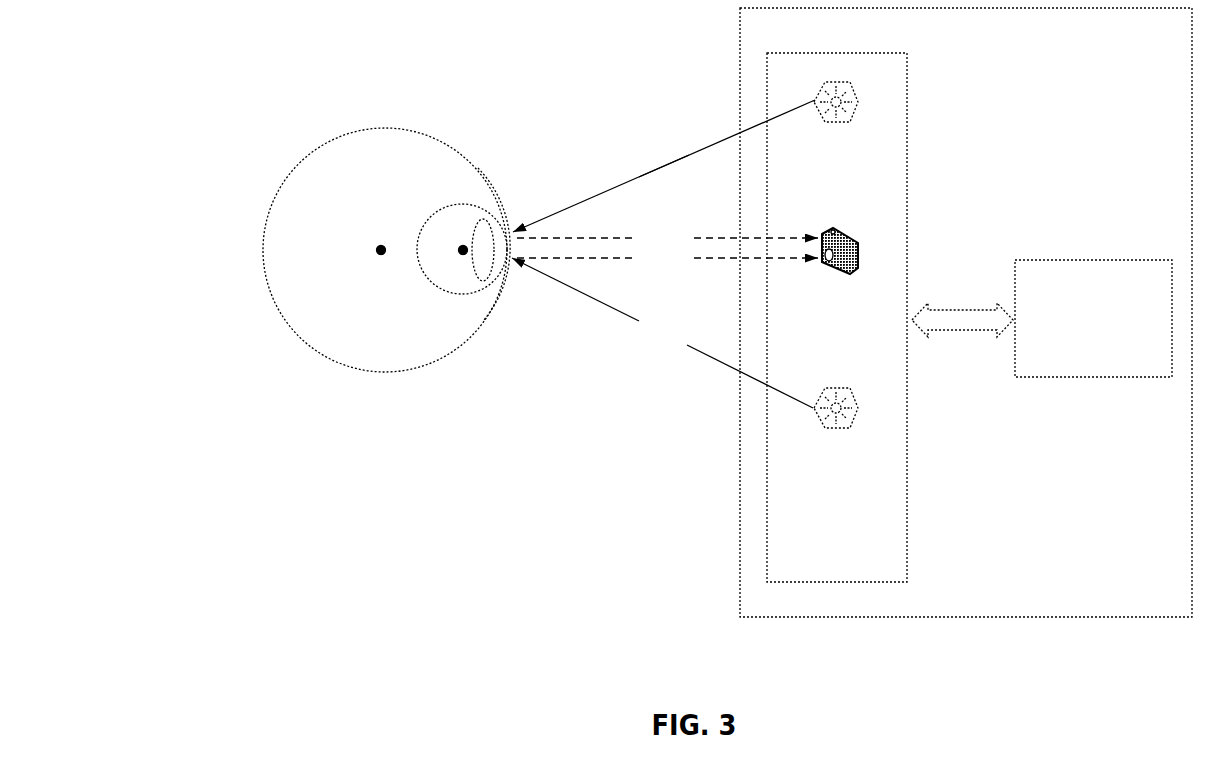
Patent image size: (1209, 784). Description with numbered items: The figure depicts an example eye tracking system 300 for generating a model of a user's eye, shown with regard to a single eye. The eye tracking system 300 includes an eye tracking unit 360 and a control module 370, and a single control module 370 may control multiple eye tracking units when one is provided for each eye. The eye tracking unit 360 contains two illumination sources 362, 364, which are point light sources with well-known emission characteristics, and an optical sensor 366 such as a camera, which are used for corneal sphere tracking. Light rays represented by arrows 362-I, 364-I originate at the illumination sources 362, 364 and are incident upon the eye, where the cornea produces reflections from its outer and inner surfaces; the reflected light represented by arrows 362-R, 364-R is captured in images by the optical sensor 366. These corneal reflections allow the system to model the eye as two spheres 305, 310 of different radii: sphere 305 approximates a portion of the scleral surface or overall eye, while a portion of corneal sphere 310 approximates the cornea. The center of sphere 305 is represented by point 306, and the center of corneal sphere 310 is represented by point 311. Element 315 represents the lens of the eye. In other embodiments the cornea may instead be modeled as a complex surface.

The eye tracking system 300 is at (1145, 63).
The sphere 305 is at (268, 203).
The center of sphere 306 is at (380, 245).
The corneal sphere 310 is at (480, 202).
The center of corneal sphere 311 is at (463, 245).
The lens of the eye 315 is at (483, 282).
The eye tracking unit 360 is at (820, 565).
The illumination source 362 is at (819, 148).
The incident light ray 362-I is at (664, 166).
The reflected light ray 362-R is at (667, 237).
The illumination source 364 is at (817, 455).
The incident light ray 364-I is at (662, 333).
The reflected light ray 364-R is at (667, 257).
The optical sensor 366 is at (821, 310).
The control module 370 is at (1076, 341).